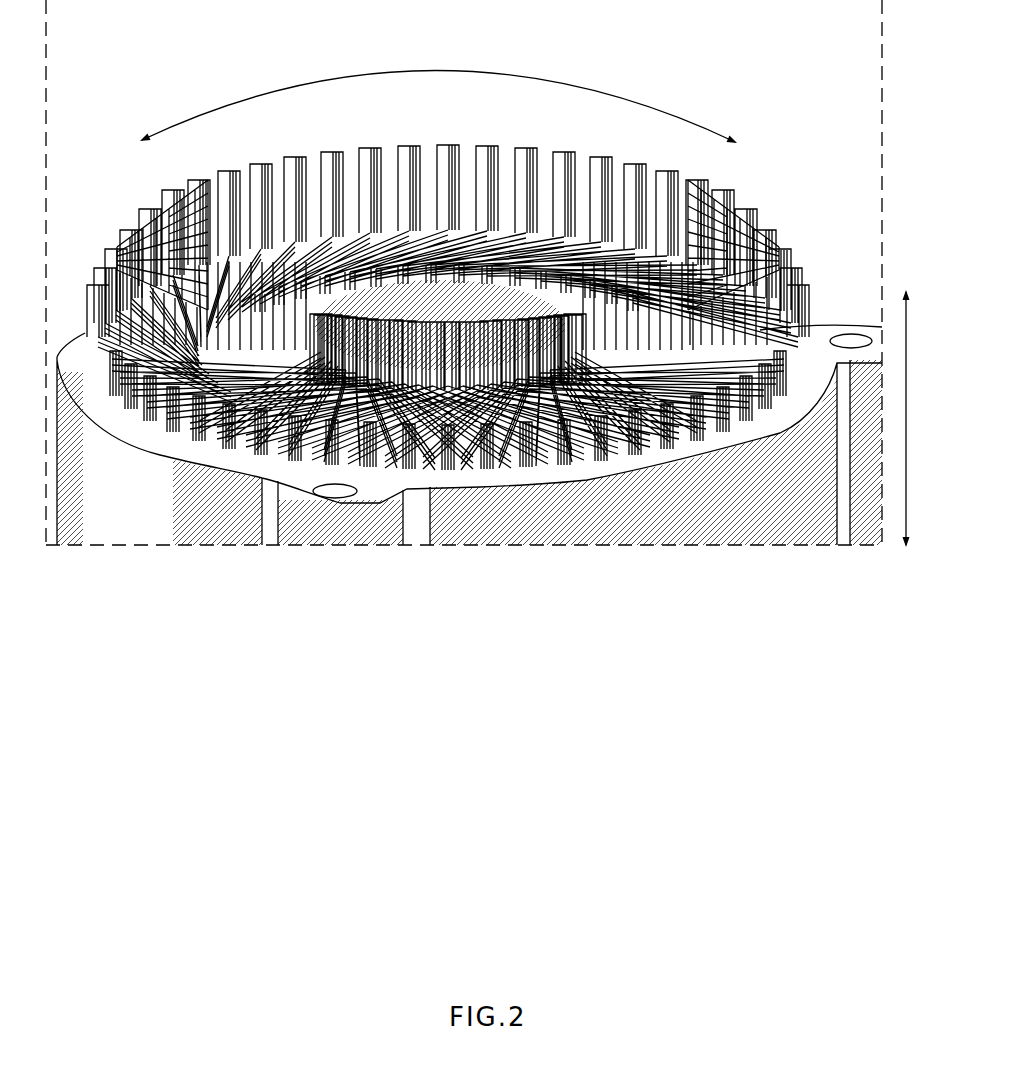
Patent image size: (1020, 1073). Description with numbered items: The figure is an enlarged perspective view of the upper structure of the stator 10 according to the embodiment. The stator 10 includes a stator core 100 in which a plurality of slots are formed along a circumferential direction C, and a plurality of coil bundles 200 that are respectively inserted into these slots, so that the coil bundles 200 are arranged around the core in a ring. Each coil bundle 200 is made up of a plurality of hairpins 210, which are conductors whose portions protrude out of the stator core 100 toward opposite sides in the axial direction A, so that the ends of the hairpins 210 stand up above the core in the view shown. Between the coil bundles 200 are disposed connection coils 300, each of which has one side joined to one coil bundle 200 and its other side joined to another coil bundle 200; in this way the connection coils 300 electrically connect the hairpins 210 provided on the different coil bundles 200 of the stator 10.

The stator 10 is at (184, 55).
The stator core 100 is at (100, 510).
The coil bundles 200 is at (448, 386).
The hairpin 210 is at (448, 165).
The connection coils 300 is at (230, 435).
The circumferential direction C is at (437, 70).
The axial direction A is at (907, 397).